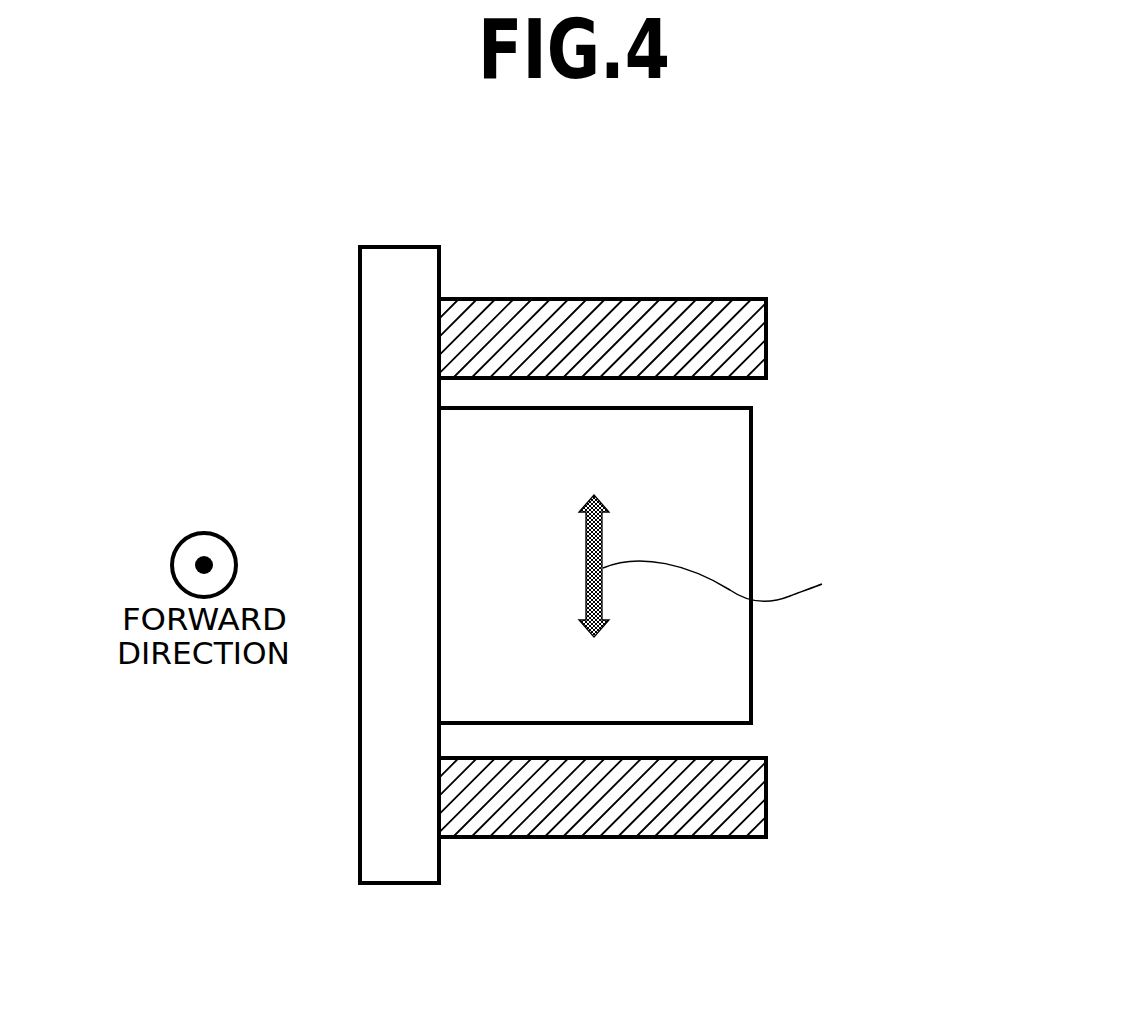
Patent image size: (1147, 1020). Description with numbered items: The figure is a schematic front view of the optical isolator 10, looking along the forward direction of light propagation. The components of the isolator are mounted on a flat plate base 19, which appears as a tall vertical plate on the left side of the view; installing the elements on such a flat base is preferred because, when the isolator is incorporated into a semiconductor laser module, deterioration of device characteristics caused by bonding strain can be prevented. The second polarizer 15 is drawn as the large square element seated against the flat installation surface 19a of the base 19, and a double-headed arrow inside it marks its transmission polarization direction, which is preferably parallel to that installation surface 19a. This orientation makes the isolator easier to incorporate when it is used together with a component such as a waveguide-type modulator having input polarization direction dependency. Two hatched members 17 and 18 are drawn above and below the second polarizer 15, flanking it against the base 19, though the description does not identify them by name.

The optical isolator 10 is at (868, 237).
The second polarizer 15 is at (725, 471).
The upper holding member 17 is at (600, 320).
The lower holding member 18 is at (607, 803).
The flat plate base 19 is at (337, 319).
The flat installation surface 19a is at (443, 466).